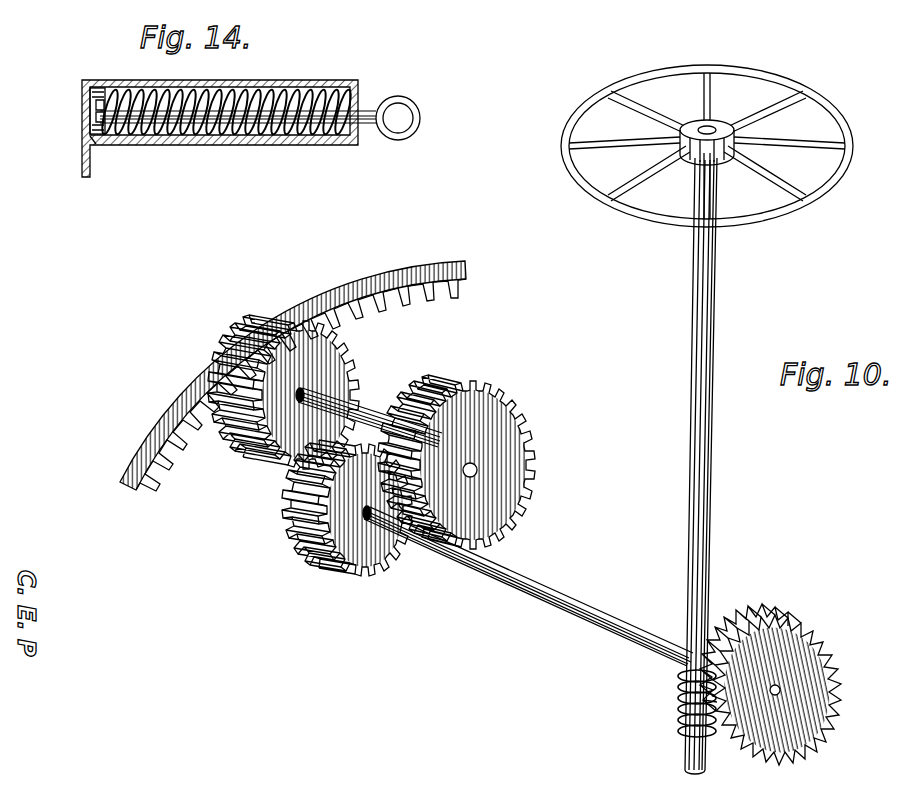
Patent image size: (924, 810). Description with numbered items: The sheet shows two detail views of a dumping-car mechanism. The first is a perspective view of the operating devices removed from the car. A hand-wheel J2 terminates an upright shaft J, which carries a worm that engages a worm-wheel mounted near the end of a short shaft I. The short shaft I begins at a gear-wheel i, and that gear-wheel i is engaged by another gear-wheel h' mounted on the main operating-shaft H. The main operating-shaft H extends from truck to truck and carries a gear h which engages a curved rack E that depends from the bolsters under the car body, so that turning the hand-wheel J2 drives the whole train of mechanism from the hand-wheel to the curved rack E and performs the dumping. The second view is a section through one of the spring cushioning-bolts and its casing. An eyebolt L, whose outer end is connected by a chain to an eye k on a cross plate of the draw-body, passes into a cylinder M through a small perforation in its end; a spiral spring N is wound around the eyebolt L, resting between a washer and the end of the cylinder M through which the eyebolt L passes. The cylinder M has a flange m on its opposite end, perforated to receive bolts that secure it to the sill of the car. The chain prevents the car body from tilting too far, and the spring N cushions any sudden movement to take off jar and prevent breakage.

In FIG. 14, the cylinder M is at (220, 118).
In FIG. 14, the spiral spring N is at (322, 104).
In FIG. 14, the eyebolt L is at (366, 108).
In FIG. 10, the eyebolt L is at (770, 716).
In FIG. 14, the eye k is at (420, 118).
In FIG. 14, the gear-wheel i is at (82, 101).
In FIG. 10, the gear-wheel i is at (385, 568).
In FIG. 14, the flange m is at (124, 160).
In FIG. 10, the hand-wheel J2 is at (707, 136).
In FIG. 10, the upright shaft J is at (705, 466).
In FIG. 10, the curved rack E is at (312, 285).
In FIG. 10, the main operating-shaft H is at (352, 422).
In FIG. 10, the gear h is at (283, 392).
In FIG. 10, the gear-wheel h' is at (456, 462).
In FIG. 10, the short shaft I is at (520, 586).